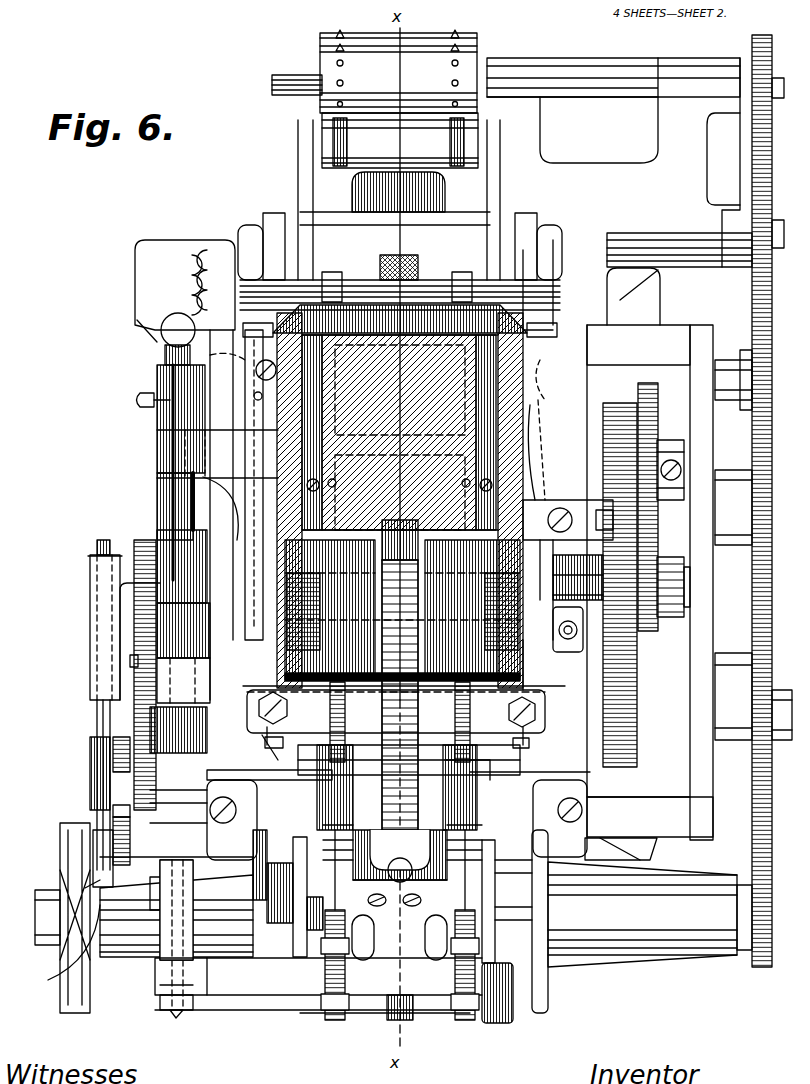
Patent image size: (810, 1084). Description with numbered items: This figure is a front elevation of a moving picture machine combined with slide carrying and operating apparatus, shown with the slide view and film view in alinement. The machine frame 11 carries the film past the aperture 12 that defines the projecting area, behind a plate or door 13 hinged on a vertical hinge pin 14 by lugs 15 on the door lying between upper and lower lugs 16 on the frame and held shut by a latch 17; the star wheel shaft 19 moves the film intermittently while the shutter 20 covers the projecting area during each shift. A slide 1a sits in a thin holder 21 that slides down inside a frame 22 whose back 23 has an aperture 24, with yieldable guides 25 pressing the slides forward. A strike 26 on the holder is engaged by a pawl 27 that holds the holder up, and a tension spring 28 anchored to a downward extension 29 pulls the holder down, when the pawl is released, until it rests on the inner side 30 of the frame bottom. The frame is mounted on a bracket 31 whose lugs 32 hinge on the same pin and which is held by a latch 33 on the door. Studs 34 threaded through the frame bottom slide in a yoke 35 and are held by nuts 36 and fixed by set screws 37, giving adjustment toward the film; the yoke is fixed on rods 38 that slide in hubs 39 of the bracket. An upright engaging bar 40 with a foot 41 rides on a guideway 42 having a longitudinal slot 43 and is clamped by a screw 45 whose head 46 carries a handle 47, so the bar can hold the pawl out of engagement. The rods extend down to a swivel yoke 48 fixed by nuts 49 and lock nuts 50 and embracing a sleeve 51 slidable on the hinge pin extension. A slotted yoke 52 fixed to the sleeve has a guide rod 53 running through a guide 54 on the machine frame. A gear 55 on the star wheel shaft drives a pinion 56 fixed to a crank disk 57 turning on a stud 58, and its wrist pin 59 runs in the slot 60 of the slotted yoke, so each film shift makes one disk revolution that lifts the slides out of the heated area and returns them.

The slide 1a is at (540, 575).
The frame 11 is at (150, 243).
The aperture 12 is at (425, 450).
The plate or door 13 is at (590, 355).
The hinge pin 14 is at (168, 530).
The lugs 15 is at (165, 470).
The lugs 16 is at (165, 375).
The latch 17 is at (575, 515).
The star wheel shaft 19 is at (130, 660).
The shutter 20 is at (112, 765).
The holder 21 is at (520, 280).
The frame 22 is at (548, 680).
The back 23 is at (548, 410).
The aperture 24 is at (548, 380).
The yieldable guides 25 is at (300, 450).
The strike 26 is at (385, 530).
The pawl 27 is at (412, 695).
The tension spring 28 is at (470, 812).
The downward extension 29 is at (435, 860).
The inner side 30 is at (540, 595).
The bracket 31 is at (225, 452).
The lugs 32 is at (168, 495).
The latch 33 is at (575, 650).
The studs 34 is at (260, 735).
The yoke 35 is at (300, 735).
The nuts 36 is at (258, 712).
The set screws 37 is at (295, 792).
The rods 38 is at (560, 905).
The hubs 39 is at (330, 788).
The engaging bar 40 is at (390, 520).
The foot 41 is at (460, 775).
The guideway 42 is at (345, 800).
The longitudinal slot 43 is at (345, 735).
The clamping screw 45 is at (470, 730).
The head 46 is at (325, 840).
The handle 47 is at (405, 880).
The swivel yoke 48 is at (207, 985).
The nuts 49 is at (325, 960).
The lock nuts 50 is at (322, 945).
The sleeve 51 is at (160, 990).
The slotted yoke 52 is at (100, 865).
The guide rod 53 is at (97, 737).
The guide 54 is at (90, 560).
The gear 55 is at (140, 540).
The pinion 56 is at (130, 845).
The crank disk 57 is at (115, 752).
The stud 58 is at (120, 810).
The wrist pin 59 is at (113, 840).
The slot 60 is at (100, 905).